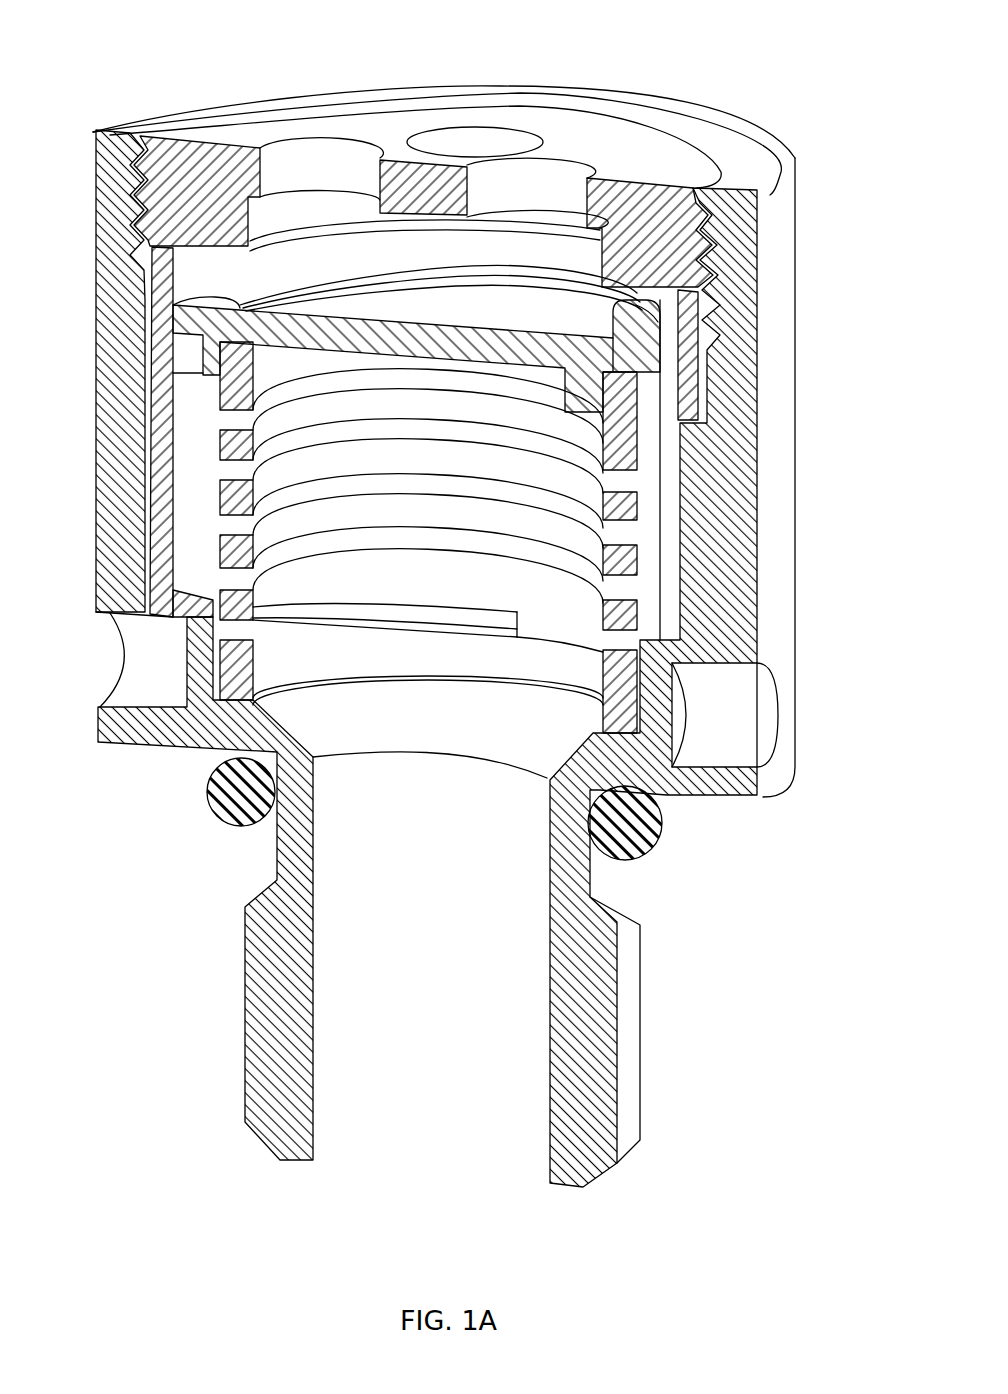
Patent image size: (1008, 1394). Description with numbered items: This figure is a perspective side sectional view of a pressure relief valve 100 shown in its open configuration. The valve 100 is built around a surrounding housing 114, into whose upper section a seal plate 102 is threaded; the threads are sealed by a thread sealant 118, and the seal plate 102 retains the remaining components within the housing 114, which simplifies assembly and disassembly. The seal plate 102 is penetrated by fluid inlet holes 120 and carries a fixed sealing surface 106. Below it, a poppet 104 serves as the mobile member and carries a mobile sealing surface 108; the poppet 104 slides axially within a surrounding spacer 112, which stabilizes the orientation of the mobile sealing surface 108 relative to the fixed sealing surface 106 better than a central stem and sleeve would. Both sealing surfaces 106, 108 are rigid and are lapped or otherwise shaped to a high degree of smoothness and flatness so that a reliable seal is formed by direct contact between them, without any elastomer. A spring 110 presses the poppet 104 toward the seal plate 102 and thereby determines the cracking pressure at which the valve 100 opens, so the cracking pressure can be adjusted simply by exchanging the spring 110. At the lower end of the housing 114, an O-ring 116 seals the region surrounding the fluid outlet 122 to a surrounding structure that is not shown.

The valve 100 is at (786, 60).
The seal plate 102 is at (693, 257).
The poppet 104 is at (499, 316).
The fixed sealing surface 106 is at (177, 265).
The mobile sealing surface 108 is at (660, 317).
The spring 110 is at (650, 550).
The spacer 112 is at (700, 373).
The housing 114 is at (797, 630).
The O-ring 116 is at (640, 852).
The thread sealant 118 is at (727, 135).
The fluid inlet holes 120 is at (460, 142).
The fluid outlet 122 is at (400, 1135).